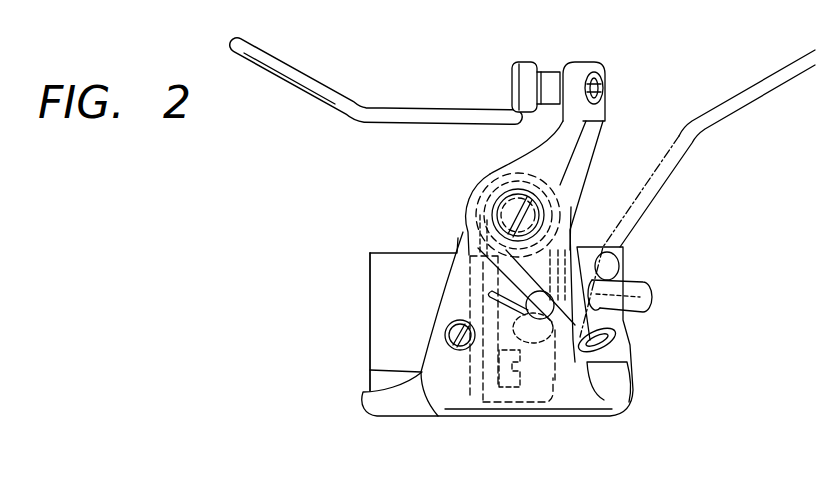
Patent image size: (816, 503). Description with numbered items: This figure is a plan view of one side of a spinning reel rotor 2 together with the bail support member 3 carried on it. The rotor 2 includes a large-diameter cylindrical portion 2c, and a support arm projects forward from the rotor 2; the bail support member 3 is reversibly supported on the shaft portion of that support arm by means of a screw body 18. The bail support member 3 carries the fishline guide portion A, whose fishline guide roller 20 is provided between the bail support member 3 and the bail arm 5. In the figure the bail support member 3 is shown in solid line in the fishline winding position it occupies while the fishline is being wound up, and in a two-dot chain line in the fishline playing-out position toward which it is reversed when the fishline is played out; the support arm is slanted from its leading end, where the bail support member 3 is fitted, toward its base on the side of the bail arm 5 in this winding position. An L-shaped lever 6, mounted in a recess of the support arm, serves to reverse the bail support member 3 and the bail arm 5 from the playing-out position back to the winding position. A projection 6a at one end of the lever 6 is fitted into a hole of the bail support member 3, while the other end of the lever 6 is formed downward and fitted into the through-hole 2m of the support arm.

The rotor 2 is at (362, 265).
The large-diameter cylindrical portion 2c is at (370, 297).
The through-hole 2m is at (521, 372).
The bail support member 3 is at (605, 63).
The bail arm 5 is at (318, 97).
The L-shaped lever 6 is at (490, 309).
The projection 6a is at (468, 258).
The screw body 18 is at (497, 203).
The fishline guide roller 20 is at (552, 78).
The fishline guide portion A is at (536, 61).